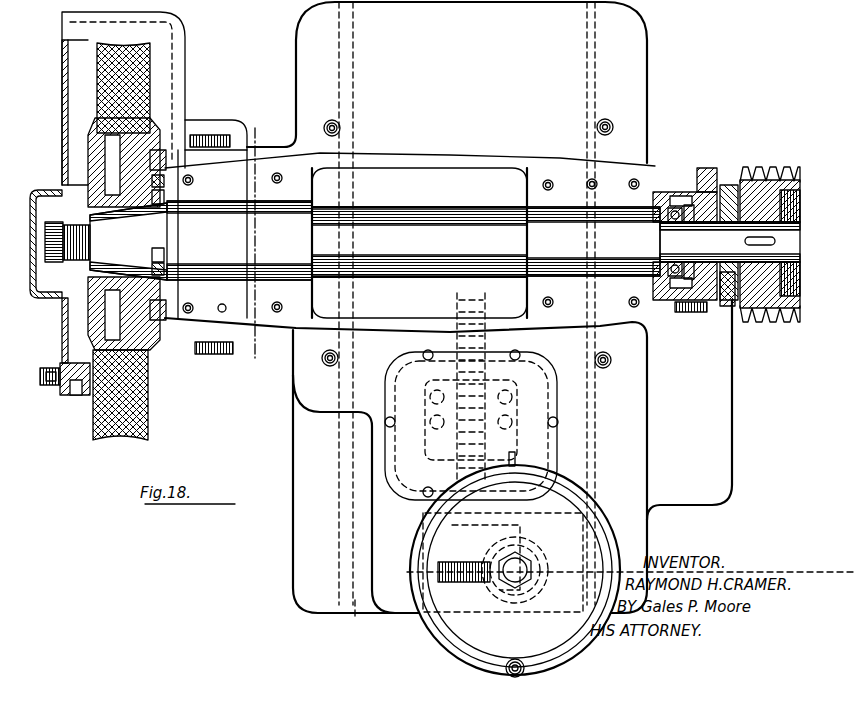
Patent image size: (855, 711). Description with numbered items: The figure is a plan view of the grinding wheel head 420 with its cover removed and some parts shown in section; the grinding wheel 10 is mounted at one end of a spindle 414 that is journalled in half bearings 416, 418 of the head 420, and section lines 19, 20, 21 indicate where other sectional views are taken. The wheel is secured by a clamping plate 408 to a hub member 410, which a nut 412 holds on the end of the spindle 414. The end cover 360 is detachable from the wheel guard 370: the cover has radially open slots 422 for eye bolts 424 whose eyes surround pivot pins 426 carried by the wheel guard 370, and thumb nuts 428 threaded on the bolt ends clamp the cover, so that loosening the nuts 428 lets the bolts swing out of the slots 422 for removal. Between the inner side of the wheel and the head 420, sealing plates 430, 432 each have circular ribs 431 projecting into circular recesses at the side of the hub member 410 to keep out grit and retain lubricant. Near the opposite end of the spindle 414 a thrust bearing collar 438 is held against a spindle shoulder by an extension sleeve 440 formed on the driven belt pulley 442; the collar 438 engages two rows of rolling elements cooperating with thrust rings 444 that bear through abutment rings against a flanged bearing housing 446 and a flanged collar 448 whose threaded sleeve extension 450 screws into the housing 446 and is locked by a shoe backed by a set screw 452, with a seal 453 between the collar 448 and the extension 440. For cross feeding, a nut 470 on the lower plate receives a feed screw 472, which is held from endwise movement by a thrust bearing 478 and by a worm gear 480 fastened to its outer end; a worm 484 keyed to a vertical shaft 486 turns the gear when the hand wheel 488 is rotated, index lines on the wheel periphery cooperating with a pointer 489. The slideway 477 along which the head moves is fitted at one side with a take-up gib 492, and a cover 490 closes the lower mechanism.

The grinding wheel 10 is at (97, 68).
The section line 19 is at (263, 135).
The section line 20 is at (579, 151).
The section line 21 is at (387, 576).
The end cover 360 is at (62, 86).
The wheel guard 370 is at (180, 380).
The clamping plate 408 is at (88, 147).
The hub member 410 is at (135, 215).
The nut 412 is at (58, 188).
The spindle 414 is at (413, 240).
The half bearing 416 is at (296, 200).
The half bearing 418 is at (527, 200).
The head 420 is at (450, 157).
The radially open slots 422 is at (62, 392).
The eye bolts 424 is at (40, 375).
The pivot pins 426 is at (76, 396).
The thumb nuts 428 is at (44, 380).
The sealing plate 430 is at (165, 200).
The circular ribs 431 is at (160, 130).
The sealing plate 432 is at (165, 225).
The thrust bearing collar 438 is at (684, 222).
The extension sleeve 440 is at (712, 224).
The driven belt pulley 442 is at (787, 167).
The thrust rings 444 is at (675, 240).
The flanged bearing housing 446 is at (660, 192).
The flanged collar 448 is at (732, 185).
The sleeve extension 450 is at (682, 196).
The set screw 452 is at (705, 168).
The seal 453 is at (722, 306).
The nut 470 is at (430, 410).
The feed screw 472 is at (457, 340).
The slideway 477 is at (356, 620).
The thrust bearing 478 is at (455, 503).
The worm gear 480 is at (440, 570).
The worm 484 is at (525, 560).
The vertical shaft 486 is at (527, 566).
The hand wheel 488 is at (446, 636).
The pointer 489 is at (515, 462).
The cover 490 is at (385, 388).
The take-up gib 492 is at (580, 612).